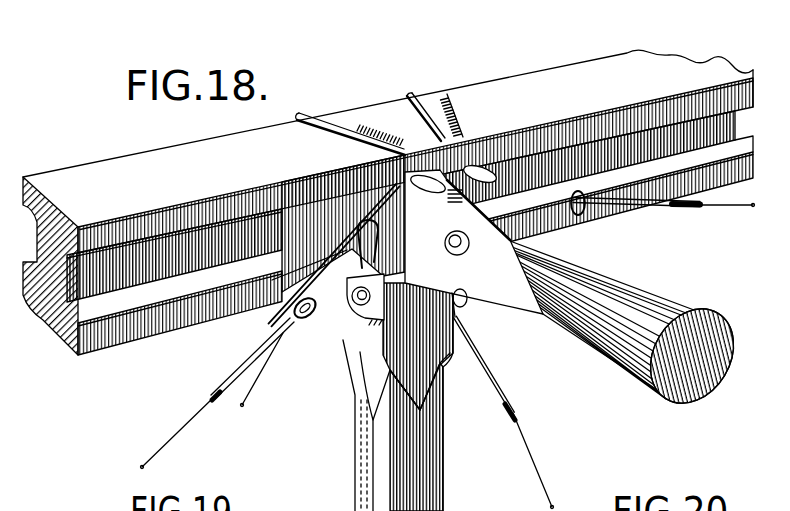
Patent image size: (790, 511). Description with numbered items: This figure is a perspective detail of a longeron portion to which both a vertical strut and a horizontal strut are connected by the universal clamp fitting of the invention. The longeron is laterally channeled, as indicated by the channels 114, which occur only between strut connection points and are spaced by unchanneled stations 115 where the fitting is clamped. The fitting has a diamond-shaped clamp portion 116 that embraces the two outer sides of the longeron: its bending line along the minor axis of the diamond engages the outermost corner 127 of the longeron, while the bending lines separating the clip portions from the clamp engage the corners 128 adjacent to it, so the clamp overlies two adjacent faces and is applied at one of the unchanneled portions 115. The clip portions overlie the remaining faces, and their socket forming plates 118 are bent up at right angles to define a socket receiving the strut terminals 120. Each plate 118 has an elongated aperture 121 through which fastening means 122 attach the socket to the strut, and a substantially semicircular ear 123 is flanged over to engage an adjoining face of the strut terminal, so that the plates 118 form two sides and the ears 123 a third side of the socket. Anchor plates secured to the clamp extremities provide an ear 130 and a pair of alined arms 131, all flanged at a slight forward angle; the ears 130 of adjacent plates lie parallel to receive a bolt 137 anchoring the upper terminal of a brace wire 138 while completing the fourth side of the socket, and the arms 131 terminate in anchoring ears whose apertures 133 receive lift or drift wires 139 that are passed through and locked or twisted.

The channel 114 is at (663, 137).
The unchanneled station 115 is at (310, 210).
The diamond-shaped clamp portion 116 is at (328, 121).
The socket forming plate 118 is at (448, 241).
The strut terminal 120 is at (497, 297).
The elongated aperture 121 is at (363, 387).
The fastening means 122 is at (470, 224).
The semicircular ear 123 is at (467, 167).
The outermost corner 127 is at (457, 93).
The adjacent corner 128 is at (470, 150).
The ear 130 is at (350, 318).
The alined arm 131 is at (380, 217).
The aperture 133 is at (283, 300).
The bolt 137 is at (455, 320).
The brace wire 138 is at (525, 440).
The lift or drift wire 139 is at (180, 427).